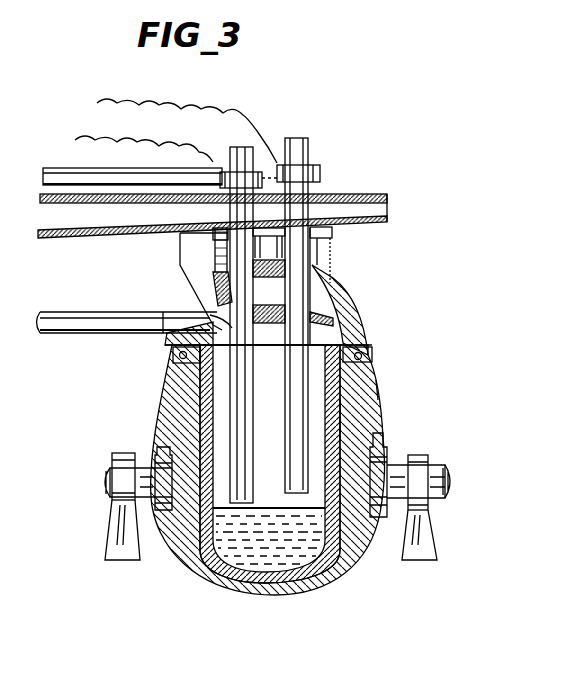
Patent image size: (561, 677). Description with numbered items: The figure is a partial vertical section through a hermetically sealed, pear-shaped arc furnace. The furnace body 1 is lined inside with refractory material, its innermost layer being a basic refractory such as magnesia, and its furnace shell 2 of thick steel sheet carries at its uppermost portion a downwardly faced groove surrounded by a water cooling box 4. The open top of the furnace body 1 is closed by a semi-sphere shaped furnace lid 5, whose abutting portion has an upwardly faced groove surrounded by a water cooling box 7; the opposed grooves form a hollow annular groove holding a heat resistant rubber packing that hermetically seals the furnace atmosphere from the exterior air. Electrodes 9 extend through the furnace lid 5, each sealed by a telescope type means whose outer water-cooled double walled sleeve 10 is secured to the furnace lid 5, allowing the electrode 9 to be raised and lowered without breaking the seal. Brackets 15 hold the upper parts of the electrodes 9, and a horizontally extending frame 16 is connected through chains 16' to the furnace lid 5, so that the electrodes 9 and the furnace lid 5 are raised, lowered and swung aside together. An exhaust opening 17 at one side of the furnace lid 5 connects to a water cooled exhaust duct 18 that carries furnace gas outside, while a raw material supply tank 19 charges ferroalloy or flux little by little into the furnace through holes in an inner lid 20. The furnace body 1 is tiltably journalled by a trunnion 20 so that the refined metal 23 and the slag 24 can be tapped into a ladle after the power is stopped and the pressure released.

The furnace body 1 is at (383, 441).
The furnace shell 2 is at (363, 423).
The water cooling box 4 is at (377, 373).
The furnace lid 5 is at (357, 298).
The water cooling box 7 is at (372, 356).
The electrode 9 is at (300, 148).
The outer water-cooled double walled sleeve 10 is at (330, 265).
The bracket 15 is at (185, 170).
The horizontally extending frame 16 is at (225, 195).
The chain 16' is at (305, 242).
The exhaust opening 17 is at (200, 320).
The water cooled exhaust duct 18 is at (140, 323).
The raw material supply tank 19 is at (197, 243).
The trunnion 20 is at (363, 339).
The refined metal 23 is at (300, 560).
The slag 24 is at (330, 513).